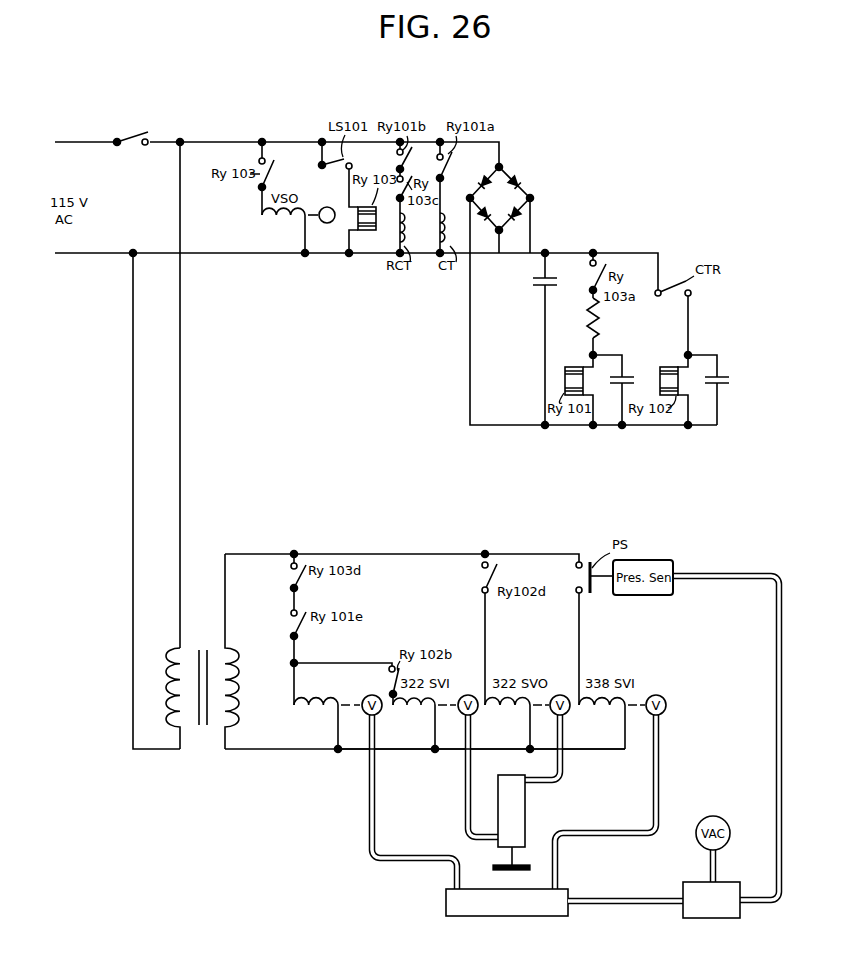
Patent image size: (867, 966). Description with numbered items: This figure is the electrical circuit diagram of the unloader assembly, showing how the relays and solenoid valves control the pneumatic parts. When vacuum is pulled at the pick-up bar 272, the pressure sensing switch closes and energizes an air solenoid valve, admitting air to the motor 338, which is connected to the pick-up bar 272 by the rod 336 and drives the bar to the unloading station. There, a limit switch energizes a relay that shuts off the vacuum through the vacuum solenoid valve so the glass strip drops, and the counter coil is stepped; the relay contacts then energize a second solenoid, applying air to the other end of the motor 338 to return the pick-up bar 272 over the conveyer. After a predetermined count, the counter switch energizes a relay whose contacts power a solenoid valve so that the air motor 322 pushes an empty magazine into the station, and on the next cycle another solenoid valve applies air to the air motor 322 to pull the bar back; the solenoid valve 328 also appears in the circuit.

The air motor 322 is at (525, 830).
The motor 338 is at (496, 868).
The rod 336 is at (612, 905).
The pick-up bar 272 is at (683, 918).
The solenoid valve 328 SVO 328 is at (318, 702).